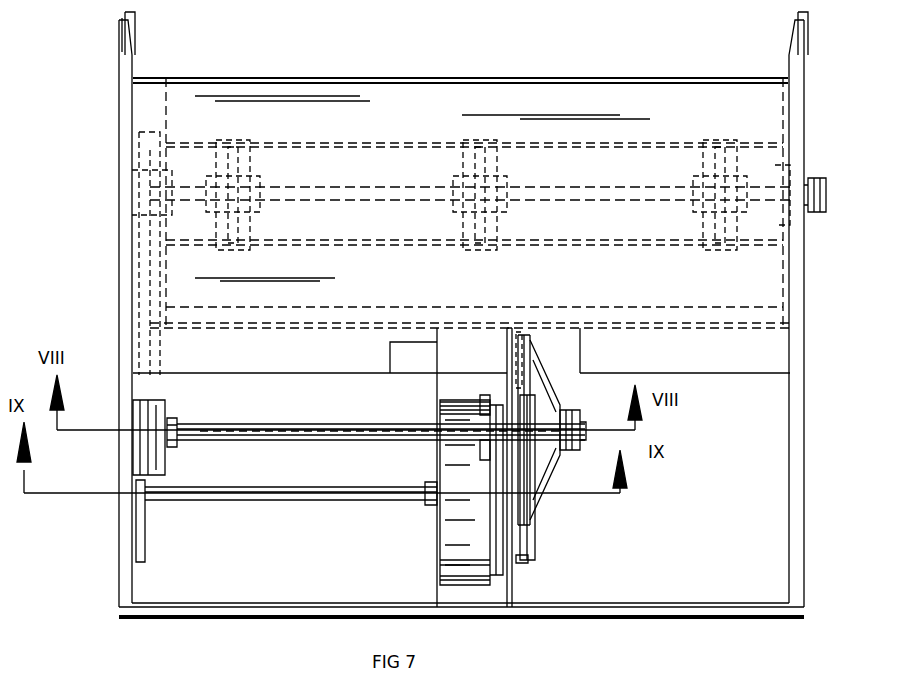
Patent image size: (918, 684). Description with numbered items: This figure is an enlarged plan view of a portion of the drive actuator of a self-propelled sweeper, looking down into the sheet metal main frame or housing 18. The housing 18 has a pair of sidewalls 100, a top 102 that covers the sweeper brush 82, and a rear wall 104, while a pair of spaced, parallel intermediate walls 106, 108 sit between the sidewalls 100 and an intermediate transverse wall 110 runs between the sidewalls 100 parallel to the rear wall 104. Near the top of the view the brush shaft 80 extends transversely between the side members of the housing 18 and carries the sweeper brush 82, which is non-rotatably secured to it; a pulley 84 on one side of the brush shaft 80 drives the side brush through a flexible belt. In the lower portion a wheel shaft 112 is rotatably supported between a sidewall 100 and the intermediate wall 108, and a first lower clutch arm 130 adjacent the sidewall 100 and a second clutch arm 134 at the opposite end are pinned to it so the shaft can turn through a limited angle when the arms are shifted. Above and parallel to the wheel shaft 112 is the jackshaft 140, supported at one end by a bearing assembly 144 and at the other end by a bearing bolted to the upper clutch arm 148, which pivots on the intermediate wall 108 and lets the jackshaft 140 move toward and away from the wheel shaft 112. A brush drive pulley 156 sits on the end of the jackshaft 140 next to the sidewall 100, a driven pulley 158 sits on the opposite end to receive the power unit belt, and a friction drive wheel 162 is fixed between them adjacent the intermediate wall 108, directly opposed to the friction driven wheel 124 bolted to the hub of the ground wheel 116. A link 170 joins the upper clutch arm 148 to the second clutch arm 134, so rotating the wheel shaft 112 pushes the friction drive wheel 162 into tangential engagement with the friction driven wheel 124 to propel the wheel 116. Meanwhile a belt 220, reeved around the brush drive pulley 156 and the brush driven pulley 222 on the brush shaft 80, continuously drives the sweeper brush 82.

The main frame assembly 18 is at (106, 114).
The brush shaft 80 is at (336, 190).
The sweeper brush 82 is at (640, 145).
The pulley 84 is at (826, 190).
The sidewalls 100 is at (120, 238).
The top 102 is at (375, 100).
The rear wall 104 is at (268, 622).
The intermediate wall 106 is at (438, 400).
The intermediate wall 108 is at (524, 336).
The intermediate transverse wall 110 is at (412, 306).
The wheel shaft 112 is at (264, 500).
The ground wheel 116 is at (455, 568).
The friction driven wheel 124 is at (490, 537).
The first lower clutch arm 130 is at (146, 548).
The second clutch arm 134 is at (522, 560).
The jackshaft 140 is at (277, 424).
The bearing assembly 144 is at (178, 420).
The upper clutch arm 148 is at (540, 395).
The brush drive pulley 156 is at (135, 410).
The driven pulley 158 is at (565, 415).
The friction drive wheel 162 is at (500, 415).
The link 170 is at (537, 540).
The belt 220 is at (140, 318).
The brush driven pulley 222 is at (128, 185).